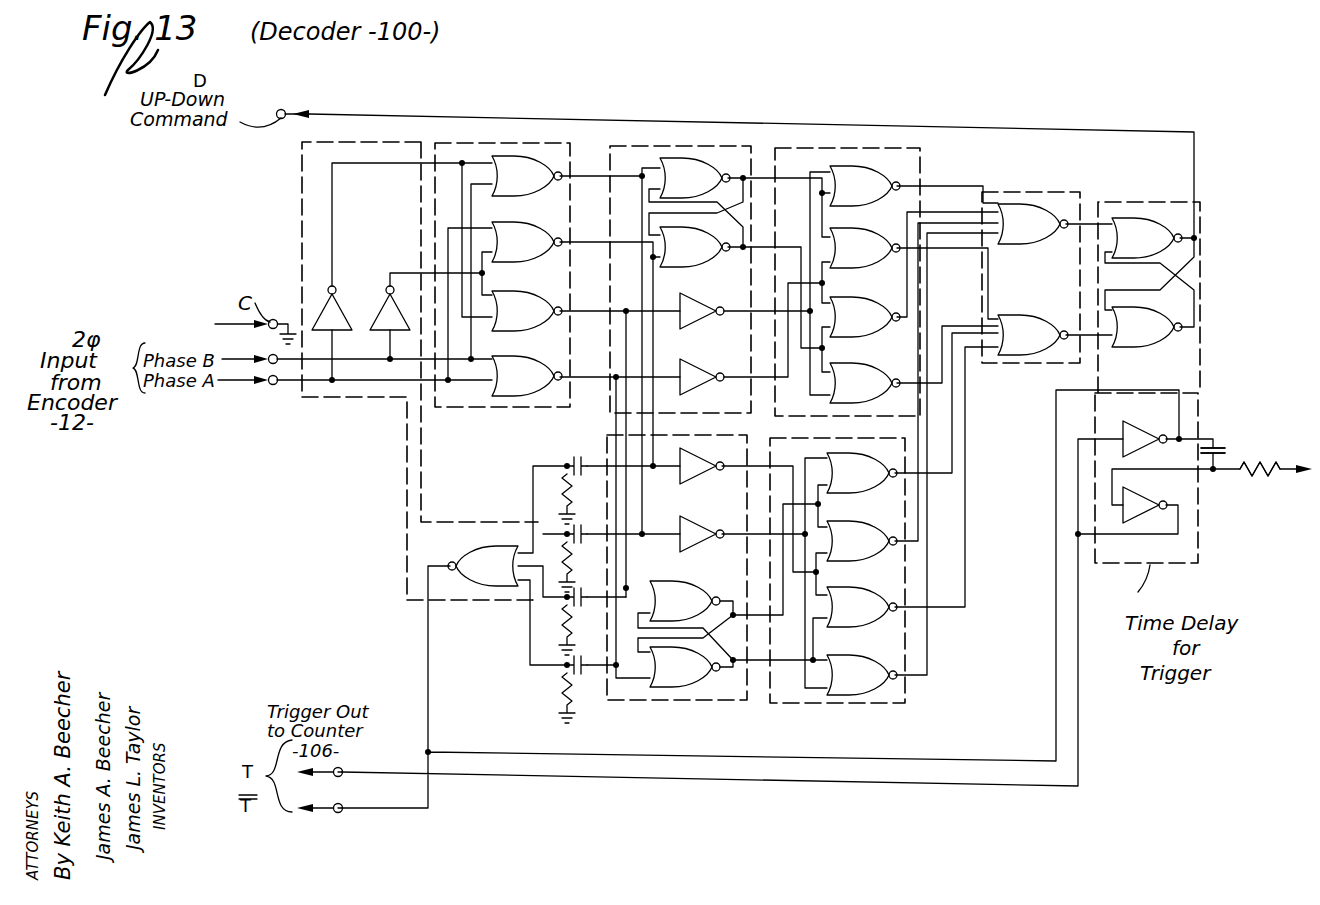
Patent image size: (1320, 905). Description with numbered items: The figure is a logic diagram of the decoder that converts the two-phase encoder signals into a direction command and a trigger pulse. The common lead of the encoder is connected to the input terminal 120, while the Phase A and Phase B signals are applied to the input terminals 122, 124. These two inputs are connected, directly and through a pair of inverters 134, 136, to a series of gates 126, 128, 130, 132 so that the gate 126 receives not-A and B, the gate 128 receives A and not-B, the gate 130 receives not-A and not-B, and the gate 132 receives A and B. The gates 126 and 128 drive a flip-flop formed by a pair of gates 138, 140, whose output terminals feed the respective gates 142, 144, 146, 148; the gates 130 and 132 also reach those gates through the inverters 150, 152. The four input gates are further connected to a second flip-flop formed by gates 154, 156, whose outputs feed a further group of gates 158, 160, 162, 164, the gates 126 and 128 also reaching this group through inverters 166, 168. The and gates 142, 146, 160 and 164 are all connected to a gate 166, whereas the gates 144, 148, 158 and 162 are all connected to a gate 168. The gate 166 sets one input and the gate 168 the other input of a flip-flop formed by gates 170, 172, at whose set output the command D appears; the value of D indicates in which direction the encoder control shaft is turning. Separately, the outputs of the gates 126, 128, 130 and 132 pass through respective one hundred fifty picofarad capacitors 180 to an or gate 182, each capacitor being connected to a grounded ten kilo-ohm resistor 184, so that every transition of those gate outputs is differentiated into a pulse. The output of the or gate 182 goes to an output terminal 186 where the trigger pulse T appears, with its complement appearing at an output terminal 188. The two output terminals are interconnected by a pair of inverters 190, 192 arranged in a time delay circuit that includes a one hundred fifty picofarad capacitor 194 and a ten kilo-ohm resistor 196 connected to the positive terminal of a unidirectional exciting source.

The input terminal 120 is at (280, 318).
The input terminal 122 is at (266, 362).
The input terminal 124 is at (273, 385).
The gate 126 is at (535, 180).
The gate 128 is at (535, 246).
The gate 130 is at (535, 315).
The gate 132 is at (520, 397).
The inverter 134 is at (323, 305).
The inverter 136 is at (383, 312).
The gate 138 is at (700, 177).
The gate 140 is at (692, 255).
The and gate 142 is at (853, 176).
The and gate 144 is at (885, 228).
The and gate 146 is at (880, 296).
The and gate 148 is at (883, 361).
The inverter 150 is at (695, 315).
The inverter 152 is at (688, 374).
The gate 154 is at (692, 600).
The gate 156 is at (688, 677).
The gate 158 is at (848, 485).
The and gate 160 is at (843, 550).
The gate 162 is at (843, 617).
The and gate 164 is at (853, 673).
The gate 166 is at (1038, 217).
The gate 168 is at (1030, 330).
The gate 170 is at (1175, 200).
The gate 172 is at (1135, 333).
The capacitor 180 is at (586, 527).
The or gate 182 is at (478, 565).
The resistor 184 is at (563, 492).
The output terminal 186 is at (341, 771).
The output terminal 188 is at (341, 811).
The inverter 190 is at (1150, 413).
The inverter 192 is at (1140, 505).
The capacitor 194 is at (1220, 447).
The resistor 196 is at (1262, 466).